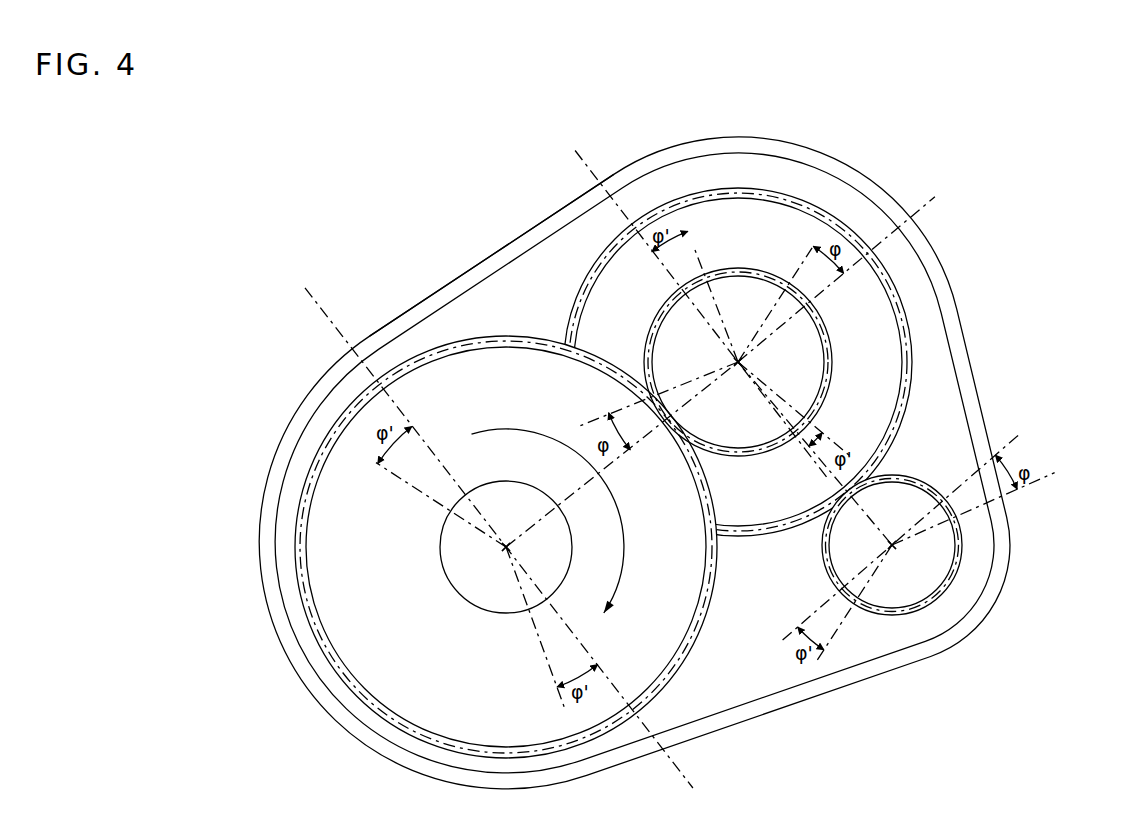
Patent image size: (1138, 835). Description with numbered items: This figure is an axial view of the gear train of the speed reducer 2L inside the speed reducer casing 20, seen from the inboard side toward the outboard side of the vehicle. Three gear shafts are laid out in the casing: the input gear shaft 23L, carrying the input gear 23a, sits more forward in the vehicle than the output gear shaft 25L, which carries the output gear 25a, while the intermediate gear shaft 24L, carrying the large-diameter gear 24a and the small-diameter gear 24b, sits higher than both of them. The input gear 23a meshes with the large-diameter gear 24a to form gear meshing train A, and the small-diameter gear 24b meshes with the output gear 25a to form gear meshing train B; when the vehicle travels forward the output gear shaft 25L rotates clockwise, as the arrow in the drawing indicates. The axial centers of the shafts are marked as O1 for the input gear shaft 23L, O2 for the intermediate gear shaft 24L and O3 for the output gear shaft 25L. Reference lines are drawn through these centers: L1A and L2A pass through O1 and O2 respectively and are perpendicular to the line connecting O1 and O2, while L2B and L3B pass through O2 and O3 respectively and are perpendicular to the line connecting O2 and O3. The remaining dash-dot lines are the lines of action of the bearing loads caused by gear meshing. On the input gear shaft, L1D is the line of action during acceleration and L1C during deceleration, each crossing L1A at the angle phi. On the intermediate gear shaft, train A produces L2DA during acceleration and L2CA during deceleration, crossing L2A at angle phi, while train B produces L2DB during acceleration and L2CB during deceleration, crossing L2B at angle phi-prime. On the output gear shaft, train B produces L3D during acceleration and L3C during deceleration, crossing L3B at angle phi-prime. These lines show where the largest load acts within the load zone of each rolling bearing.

The speed reducer casing 20 is at (327, 715).
The speed reducer 2L is at (526, 275).
The output gear 25a is at (297, 563).
The output gear shaft 25L is at (496, 560).
The large-diameter gear 24a is at (913, 371).
The small-diameter gear 24b is at (742, 268).
The intermediate gear shaft 24L is at (768, 362).
The input gear 23a is at (955, 573).
The input gear shaft 23L is at (905, 550).
The axial center of the input gear shaft O1 is at (902, 561).
The axial center of the intermediate gear shaft O2 is at (744, 380).
The axial center of the output gear shaft O3 is at (520, 554).
The straight line L1A is at (925, 530).
The line of action L1C is at (992, 509).
The line of action L1D is at (836, 614).
The straight line L2A is at (851, 267).
The straight line L2B is at (691, 302).
The line of action L2CA is at (631, 396).
The line of action L2CB is at (809, 410).
The line of action L2DA is at (775, 290).
The line of action L2DB is at (715, 288).
The straight line L3B is at (490, 530).
The line of action L3C is at (422, 502).
The line of action L3D is at (541, 641).